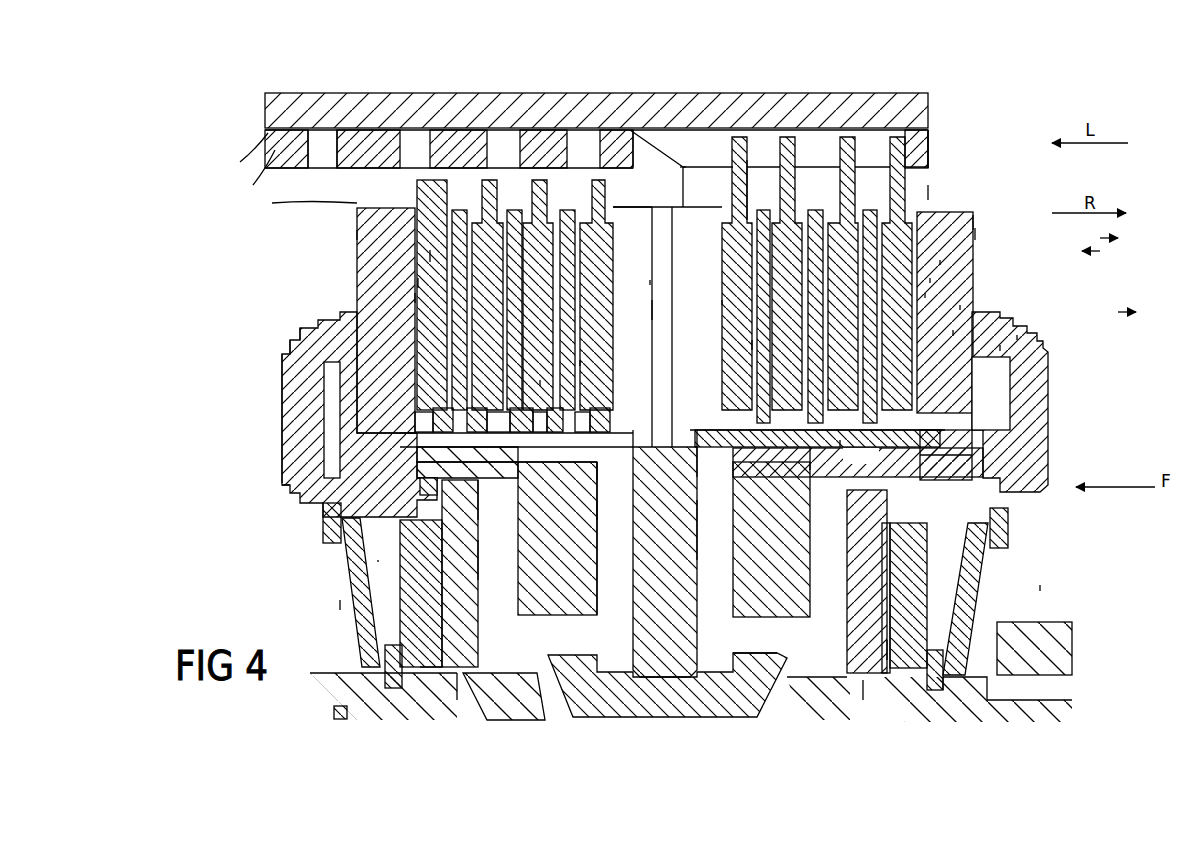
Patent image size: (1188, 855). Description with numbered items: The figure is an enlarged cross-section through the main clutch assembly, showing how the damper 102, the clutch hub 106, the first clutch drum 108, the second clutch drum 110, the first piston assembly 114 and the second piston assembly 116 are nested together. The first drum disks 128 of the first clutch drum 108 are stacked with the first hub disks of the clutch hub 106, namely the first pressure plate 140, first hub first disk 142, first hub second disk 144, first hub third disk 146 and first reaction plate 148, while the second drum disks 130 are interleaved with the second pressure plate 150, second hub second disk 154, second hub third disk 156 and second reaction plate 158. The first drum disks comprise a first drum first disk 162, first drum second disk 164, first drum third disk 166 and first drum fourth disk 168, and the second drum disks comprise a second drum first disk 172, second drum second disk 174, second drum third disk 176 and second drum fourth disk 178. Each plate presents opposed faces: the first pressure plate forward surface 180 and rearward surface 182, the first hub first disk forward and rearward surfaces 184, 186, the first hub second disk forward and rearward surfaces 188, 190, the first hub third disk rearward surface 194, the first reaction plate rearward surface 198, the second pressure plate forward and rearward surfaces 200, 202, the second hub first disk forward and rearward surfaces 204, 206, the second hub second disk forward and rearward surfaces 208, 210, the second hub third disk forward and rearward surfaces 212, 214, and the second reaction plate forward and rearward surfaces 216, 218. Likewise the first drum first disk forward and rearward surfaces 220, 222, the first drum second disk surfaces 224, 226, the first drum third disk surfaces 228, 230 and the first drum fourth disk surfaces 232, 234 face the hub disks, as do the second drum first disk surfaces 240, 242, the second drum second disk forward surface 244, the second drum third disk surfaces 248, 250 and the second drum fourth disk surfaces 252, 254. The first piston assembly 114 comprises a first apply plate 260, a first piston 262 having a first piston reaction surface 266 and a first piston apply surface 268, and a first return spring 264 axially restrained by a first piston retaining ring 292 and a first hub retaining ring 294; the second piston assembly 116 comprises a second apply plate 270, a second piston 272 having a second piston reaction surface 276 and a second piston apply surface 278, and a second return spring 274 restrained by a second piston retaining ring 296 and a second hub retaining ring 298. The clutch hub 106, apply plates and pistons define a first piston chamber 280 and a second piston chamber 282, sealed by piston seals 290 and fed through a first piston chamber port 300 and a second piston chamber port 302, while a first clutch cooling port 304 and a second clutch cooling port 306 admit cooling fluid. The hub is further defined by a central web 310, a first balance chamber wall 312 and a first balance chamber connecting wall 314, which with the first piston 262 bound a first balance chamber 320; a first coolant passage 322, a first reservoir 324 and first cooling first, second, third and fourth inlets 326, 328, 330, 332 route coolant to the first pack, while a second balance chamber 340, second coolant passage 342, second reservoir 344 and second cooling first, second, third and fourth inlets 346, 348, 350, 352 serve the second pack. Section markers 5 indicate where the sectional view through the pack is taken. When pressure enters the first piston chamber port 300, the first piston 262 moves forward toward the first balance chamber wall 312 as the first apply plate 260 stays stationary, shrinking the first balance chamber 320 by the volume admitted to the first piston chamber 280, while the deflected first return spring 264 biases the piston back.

The damper 102 is at (1047, 643).
The clutch hub 106 is at (490, 700).
The first clutch drum 108 is at (571, 110).
The second clutch drum 110 is at (268, 150).
The first piston assembly 114 is at (1043, 588).
The second piston assembly 116 is at (335, 605).
The first drum disks 128 is at (930, 192).
The second drum disks 130 is at (392, 185).
The first pressure plate 140 is at (957, 217).
The first hub first disk 142 is at (895, 147).
The first hub second disk 144 is at (815, 213).
The first hub third disk 146 is at (762, 215).
The first reaction plate 148 is at (683, 167).
The second pressure plate 150 is at (357, 213).
The second hub second disk 154 is at (489, 182).
The second hub third disk 156 is at (540, 182).
The second reaction plate 158 is at (598, 182).
The first drum first disk 162 is at (380, 150).
The first drum second disk 164 is at (847, 137).
The first drum third disk 166 is at (787, 137).
The first drum fourth disk 168 is at (740, 140).
The second drum first disk 172 is at (417, 188).
The second drum second disk 174 is at (458, 212).
The second drum third disk 176 is at (514, 212).
The second drum fourth disk 178 is at (568, 212).
The first pressure plate forward surface 180 is at (933, 280).
The first pressure plate rearward surface 182 is at (982, 234).
The first hub first disk forward surface 184 is at (1000, 348).
The first hub first disk rearward surface 186 is at (973, 216).
The first hub second disk forward surface 188 is at (750, 448).
The first hub second disk rearward surface 190 is at (953, 333).
The first hub third disk rearward surface 194 is at (813, 447).
The first reaction plate rearward surface 198 is at (652, 312).
The second pressure plate forward surface 200 is at (352, 235).
The second pressure plate rearward surface 202 is at (418, 283).
The second hub first disk forward surface 204 is at (290, 383).
The second hub first disk rearward surface 206 is at (300, 341).
The second hub second disk forward surface 208 is at (290, 358).
The second hub second disk rearward surface 210 is at (612, 507).
The second hub third disk forward surface 212 is at (582, 363).
The second hub third disk rearward surface 214 is at (648, 470).
The second reaction plate forward surface 216 is at (747, 343).
The second reaction plate rearward surface 218 is at (658, 274).
The first drum first disk forward surface 220 is at (960, 307).
The first drum first disk rearward surface 222 is at (927, 295).
The first drum second disk forward surface 224 is at (940, 262).
The first drum second disk rearward surface 226 is at (908, 195).
The first drum third disk forward surface 228 is at (747, 210).
The first drum third disk rearward surface 230 is at (733, 302).
The first drum fourth disk forward surface 232 is at (697, 257).
The first drum fourth disk rearward surface 234 is at (925, 458).
The second drum first disk forward surface 240 is at (415, 298).
The second drum first disk rearward surface 242 is at (324, 395).
The second drum second disk forward surface 244 is at (428, 256).
The second drum third disk forward surface 248 is at (660, 246).
The second drum third disk rearward surface 250 is at (693, 283).
The second drum fourth disk forward surface 252 is at (540, 383).
The second drum fourth disk rearward surface 254 is at (640, 210).
The first apply plate 260 is at (913, 572).
The first piston 262 is at (1000, 405).
The first return spring 264 is at (963, 613).
The first piston reaction surface 266 is at (1017, 337).
The first piston apply surface 268 is at (887, 652).
The second apply plate 270 is at (427, 660).
The second piston 272 is at (300, 432).
The second return spring 274 is at (355, 547).
The second piston reaction surface 276 is at (357, 313).
The second piston apply surface 278 is at (362, 547).
The first piston chamber 280 is at (885, 697).
The second piston chamber 282 is at (433, 615).
The piston seals 290 is at (863, 673).
The first piston retaining ring 292 is at (1010, 537).
The first hub retaining ring 294 is at (965, 690).
The second piston retaining ring 296 is at (325, 527).
The second hub retaining ring 298 is at (390, 657).
The first piston chamber port 300 is at (863, 703).
The second piston chamber port 302 is at (472, 700).
The first clutch cooling port 304 is at (777, 703).
The second clutch cooling port 306 is at (550, 700).
The central web 310 is at (682, 546).
The first balance chamber wall 312 is at (787, 544).
The first balance chamber connecting wall 314 is at (575, 542).
The first balance chamber 320 is at (812, 569).
The first coolant passage 322 is at (695, 569).
The first reservoir 324 is at (927, 458).
The first cooling first inlet 326 is at (940, 437).
The first cooling second inlet 328 is at (840, 447).
The first cooling third inlet 330 is at (813, 447).
The first cooling fourth inlet 332 is at (723, 450).
The second balance chamber 340 is at (482, 569).
The second coolant passage 342 is at (598, 567).
The second reservoir 344 is at (283, 479).
The second cooling first inlet 346 is at (400, 456).
The second cooling second inlet 348 is at (490, 433).
The second cooling third inlet 350 is at (538, 432).
The second cooling fourth inlet 352 is at (585, 432).
The section line 5- 5 is at (690, 430).